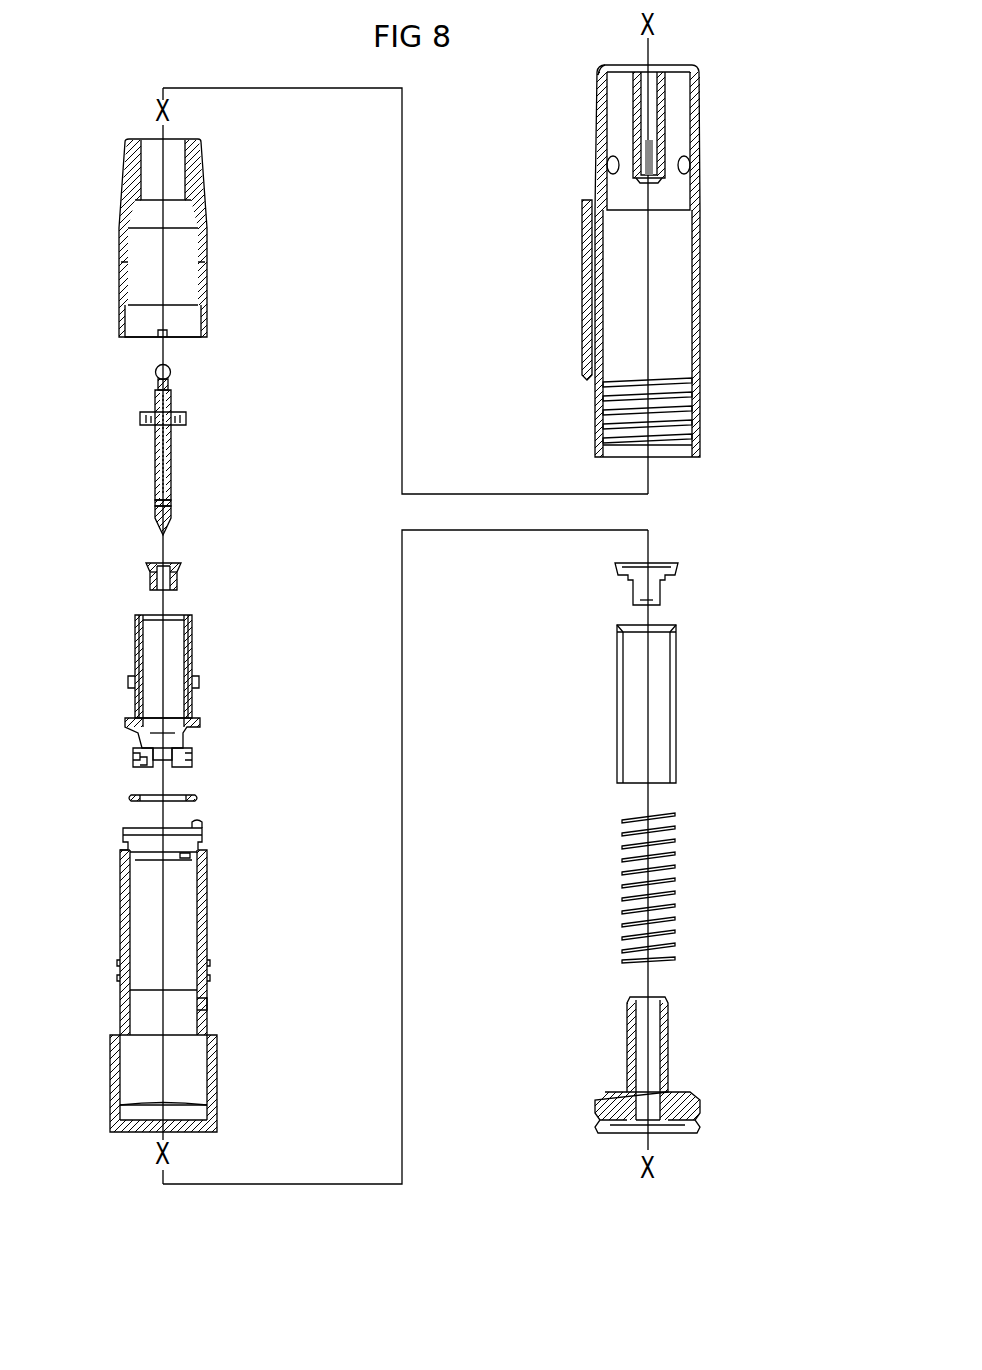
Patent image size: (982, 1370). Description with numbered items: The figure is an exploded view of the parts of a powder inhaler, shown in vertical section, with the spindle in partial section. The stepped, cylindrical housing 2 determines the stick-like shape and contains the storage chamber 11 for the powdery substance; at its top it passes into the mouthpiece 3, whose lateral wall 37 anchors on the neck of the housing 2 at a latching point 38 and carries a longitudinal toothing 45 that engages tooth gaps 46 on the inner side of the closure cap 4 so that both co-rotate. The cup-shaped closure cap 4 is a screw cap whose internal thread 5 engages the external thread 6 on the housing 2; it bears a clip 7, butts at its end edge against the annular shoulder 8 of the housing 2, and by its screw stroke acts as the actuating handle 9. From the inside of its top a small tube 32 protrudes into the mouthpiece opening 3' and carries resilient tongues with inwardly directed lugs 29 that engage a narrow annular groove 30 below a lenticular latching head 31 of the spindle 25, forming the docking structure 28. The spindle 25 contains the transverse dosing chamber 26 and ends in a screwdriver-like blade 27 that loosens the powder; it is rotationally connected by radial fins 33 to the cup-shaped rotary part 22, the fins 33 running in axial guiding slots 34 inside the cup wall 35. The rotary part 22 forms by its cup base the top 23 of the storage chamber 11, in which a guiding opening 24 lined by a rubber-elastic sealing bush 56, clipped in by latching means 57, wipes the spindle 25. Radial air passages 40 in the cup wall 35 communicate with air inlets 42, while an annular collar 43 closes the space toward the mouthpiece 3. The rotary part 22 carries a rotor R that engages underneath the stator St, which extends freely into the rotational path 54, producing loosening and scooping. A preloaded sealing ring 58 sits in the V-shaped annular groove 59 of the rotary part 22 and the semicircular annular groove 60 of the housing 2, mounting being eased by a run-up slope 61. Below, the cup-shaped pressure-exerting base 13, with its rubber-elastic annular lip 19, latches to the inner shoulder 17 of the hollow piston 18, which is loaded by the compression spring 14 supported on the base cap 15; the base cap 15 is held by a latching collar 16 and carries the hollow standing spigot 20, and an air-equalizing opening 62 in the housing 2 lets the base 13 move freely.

The housing 2 is at (200, 921).
The mouthpiece 3 is at (131, 207).
The mouthpiece opening 3' is at (117, 156).
The closure cap 4 is at (608, 72).
The internal thread 5 is at (690, 395).
The external thread 6 is at (208, 964).
The clip 7 is at (586, 285).
The annular shoulder 8 is at (115, 1040).
The actuating handle 9 is at (594, 105).
The storage chamber 11 is at (141, 919).
The pressure-exerting base 13 is at (627, 582).
The compression spring 14 is at (624, 840).
The base cap 15 is at (620, 1137).
The latching collar 16 is at (598, 1113).
The inner shoulder 17 is at (677, 631).
The hollow piston 18 is at (618, 665).
The annular lip 19 is at (678, 572).
The standing spigot 20 is at (668, 1053).
The rotary part 22 is at (132, 695).
The top 23 is at (134, 716).
The guiding opening 24 is at (150, 581).
The spindle 25 is at (160, 451).
The dosing chamber 26 is at (172, 505).
The blade 27 is at (167, 531).
The docking structure 28 is at (186, 366).
The lugs 29 is at (640, 180).
The annular groove 30 is at (157, 379).
The latching head 31 is at (156, 371).
The small tube 32 is at (634, 133).
The radial fins 33 is at (141, 419).
The axial guiding slots 34 is at (140, 645).
The cup wall 35 is at (188, 626).
The lateral wall 37 is at (147, 197).
The latching point 38 is at (159, 331).
The air passage 40 is at (128, 722).
The air inlets 42 is at (121, 273).
The annular collar 43 is at (199, 683).
The longitudinal toothing 45 is at (119, 234).
The tooth gaps 46 is at (612, 172).
The rotational path 54 is at (140, 759).
The sealing bush 56 is at (180, 570).
The latching means 57 is at (152, 570).
The sealing ring 58 is at (198, 799).
The annular groove 59 is at (184, 739).
The annular groove 60 is at (123, 836).
The run-up slope 61 is at (198, 828).
The air-equalizing opening 62 is at (206, 1004).
The rotor R is at (193, 764).
The stator St is at (186, 857).